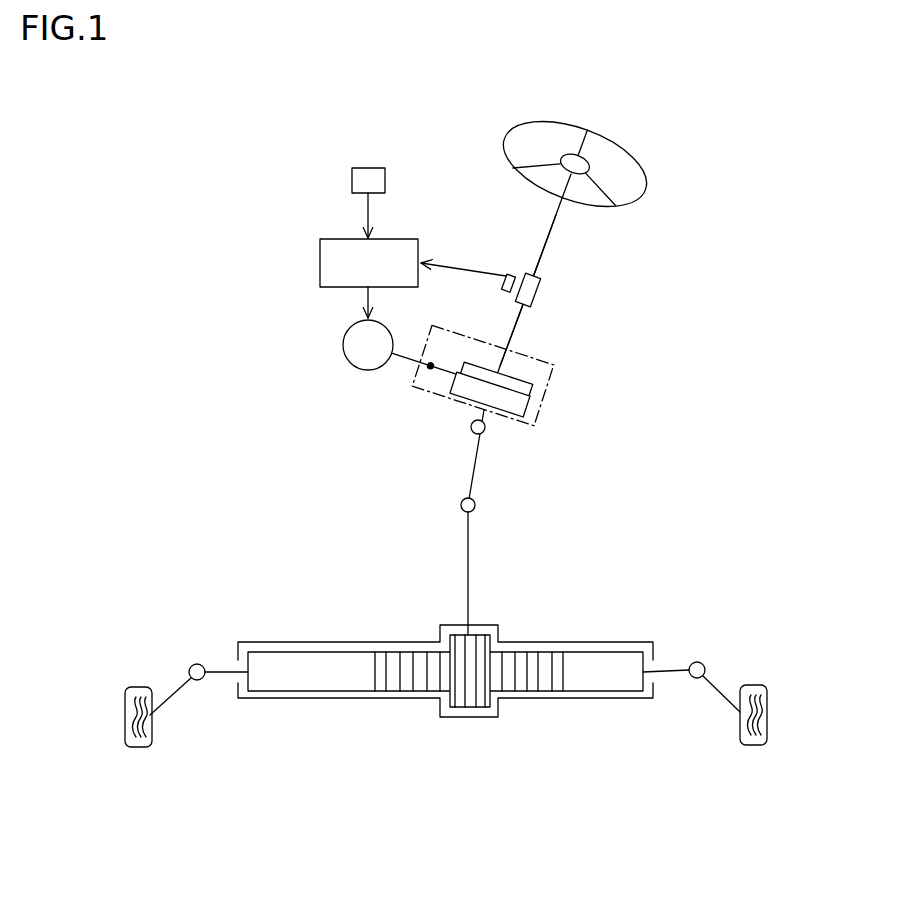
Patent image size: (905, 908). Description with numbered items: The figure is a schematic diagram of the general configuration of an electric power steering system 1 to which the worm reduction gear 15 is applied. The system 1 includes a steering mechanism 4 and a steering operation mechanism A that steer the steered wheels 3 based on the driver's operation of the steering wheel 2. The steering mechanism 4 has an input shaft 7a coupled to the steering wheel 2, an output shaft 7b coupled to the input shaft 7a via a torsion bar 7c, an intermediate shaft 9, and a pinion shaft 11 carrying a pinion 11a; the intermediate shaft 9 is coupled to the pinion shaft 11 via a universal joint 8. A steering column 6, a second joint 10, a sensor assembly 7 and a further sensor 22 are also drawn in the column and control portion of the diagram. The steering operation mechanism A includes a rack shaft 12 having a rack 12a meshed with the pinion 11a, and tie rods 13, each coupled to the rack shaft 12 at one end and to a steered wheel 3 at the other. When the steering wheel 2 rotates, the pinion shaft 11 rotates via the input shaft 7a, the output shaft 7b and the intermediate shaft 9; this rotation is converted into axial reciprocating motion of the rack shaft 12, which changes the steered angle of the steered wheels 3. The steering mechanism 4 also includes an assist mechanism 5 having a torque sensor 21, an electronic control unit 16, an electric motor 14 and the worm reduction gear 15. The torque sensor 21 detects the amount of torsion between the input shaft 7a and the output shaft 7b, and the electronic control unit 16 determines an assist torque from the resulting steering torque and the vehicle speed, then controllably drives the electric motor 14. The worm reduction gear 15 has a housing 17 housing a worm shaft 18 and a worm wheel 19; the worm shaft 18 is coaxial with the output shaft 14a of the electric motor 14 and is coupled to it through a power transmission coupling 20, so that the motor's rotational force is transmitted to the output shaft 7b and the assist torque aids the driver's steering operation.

The electric power steering system 1 is at (630, 119).
The steering wheel 2 is at (545, 122).
The steered wheels 3 is at (136, 748).
The steering mechanism 4 is at (660, 164).
The assist mechanism 5 is at (336, 329).
The steering shaft 6 is at (556, 224).
The torque sensor 7 is at (601, 262).
The input shaft 7a is at (540, 263).
The output shaft 7b is at (520, 316).
The torsion bar 7c is at (537, 292).
The universal joint 8 is at (486, 431).
The intermediate shaft 9 is at (474, 465).
The universal joint 10 is at (476, 508).
The pinion shaft 11 is at (473, 586).
The pinion 11a is at (470, 708).
The rack shaft 12 is at (534, 694).
The rack 12a is at (420, 692).
The tie rods 13 is at (172, 697).
The electric motor 14 is at (365, 371).
The output shaft of the electric motor 14a is at (406, 360).
The worm reduction gear 15 is at (548, 428).
The electronic control unit 16 is at (319, 262).
The housing 17 is at (547, 365).
The worm shaft 18 is at (527, 406).
The worm wheel 19 is at (532, 390).
The power transmission coupling 20 is at (431, 370).
The torque sensor 21 is at (507, 275).
The vehicle speed sensor 22 is at (351, 180).
The steering operation mechanism A is at (501, 722).